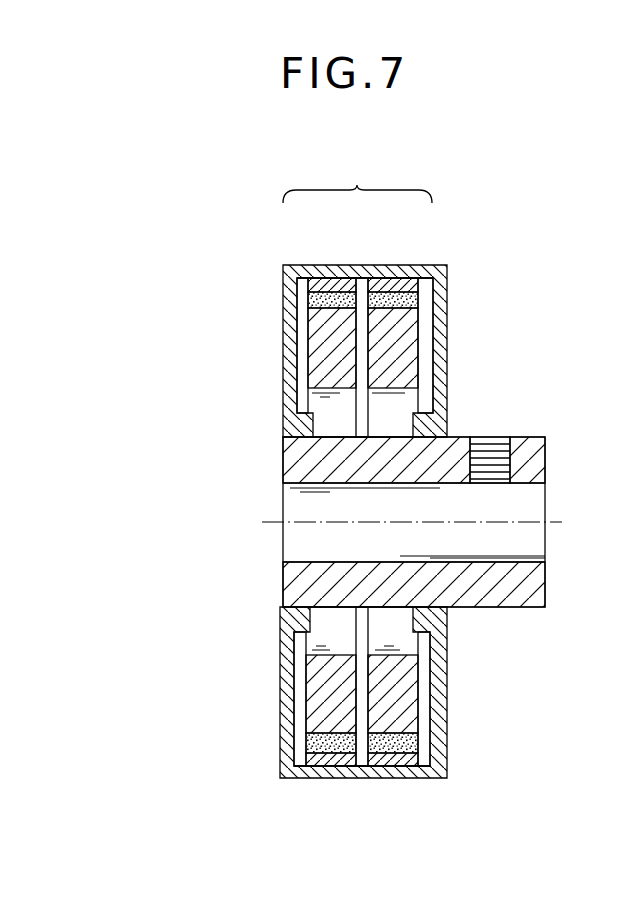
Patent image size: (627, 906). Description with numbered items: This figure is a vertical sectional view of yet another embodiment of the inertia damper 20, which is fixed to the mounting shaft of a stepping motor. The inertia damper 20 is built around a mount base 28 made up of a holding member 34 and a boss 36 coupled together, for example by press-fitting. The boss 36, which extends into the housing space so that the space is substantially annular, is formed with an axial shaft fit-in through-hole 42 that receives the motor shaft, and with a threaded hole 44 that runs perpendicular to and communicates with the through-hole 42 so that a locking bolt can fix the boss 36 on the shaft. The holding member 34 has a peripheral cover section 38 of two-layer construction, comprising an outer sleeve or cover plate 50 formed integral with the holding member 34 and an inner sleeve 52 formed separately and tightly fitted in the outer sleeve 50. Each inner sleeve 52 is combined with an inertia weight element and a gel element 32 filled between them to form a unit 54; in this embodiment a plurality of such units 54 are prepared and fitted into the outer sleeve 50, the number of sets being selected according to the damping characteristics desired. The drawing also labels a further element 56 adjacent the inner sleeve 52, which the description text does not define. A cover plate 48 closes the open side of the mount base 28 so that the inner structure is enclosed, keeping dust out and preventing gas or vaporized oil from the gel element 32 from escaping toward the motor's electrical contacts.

The inertia damper 20 is at (210, 250).
The mount base 28 is at (449, 269).
The gel element 32 is at (300, 300).
The holding member 34 is at (437, 663).
The boss 36 is at (290, 452).
The peripheral cover section 38 is at (357, 177).
The shaft fit-in through-hole 42 is at (520, 557).
The threaded hole 44 is at (503, 428).
The cover plate 48 is at (300, 663).
The outer sleeve or cover plate 50 is at (347, 278).
The inner sleeve 52 is at (325, 283).
The unit 54 is at (320, 340).
The sleeve 56 is at (428, 296).